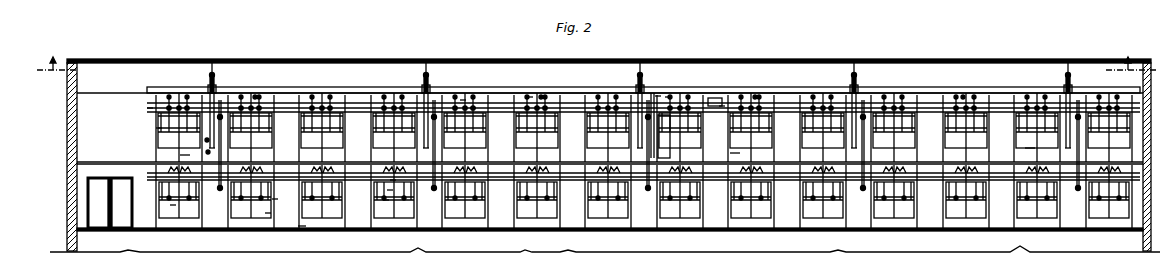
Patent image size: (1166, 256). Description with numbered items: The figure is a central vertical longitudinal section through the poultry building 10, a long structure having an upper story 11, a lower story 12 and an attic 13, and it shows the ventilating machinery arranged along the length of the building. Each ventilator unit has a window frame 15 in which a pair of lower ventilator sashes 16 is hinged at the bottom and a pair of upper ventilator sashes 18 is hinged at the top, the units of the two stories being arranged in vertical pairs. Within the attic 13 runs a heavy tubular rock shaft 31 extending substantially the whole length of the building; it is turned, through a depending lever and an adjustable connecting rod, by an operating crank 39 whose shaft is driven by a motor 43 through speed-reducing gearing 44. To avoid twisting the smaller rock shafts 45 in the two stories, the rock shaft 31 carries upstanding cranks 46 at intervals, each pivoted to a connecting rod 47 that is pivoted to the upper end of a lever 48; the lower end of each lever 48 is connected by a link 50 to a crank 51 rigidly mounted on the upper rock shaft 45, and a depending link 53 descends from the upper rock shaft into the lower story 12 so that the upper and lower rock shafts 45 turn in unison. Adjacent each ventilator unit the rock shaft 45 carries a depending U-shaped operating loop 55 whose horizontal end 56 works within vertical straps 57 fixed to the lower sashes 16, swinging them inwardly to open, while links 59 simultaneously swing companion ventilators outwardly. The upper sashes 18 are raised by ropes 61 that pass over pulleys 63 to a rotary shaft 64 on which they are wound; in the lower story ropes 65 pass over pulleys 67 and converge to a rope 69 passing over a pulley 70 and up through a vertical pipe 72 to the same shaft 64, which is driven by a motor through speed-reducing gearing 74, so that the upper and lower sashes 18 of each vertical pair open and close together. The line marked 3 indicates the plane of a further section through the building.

The section line 3- 3 is at (596, 50).
The poultry building 10 is at (263, 57).
The upper story 11 is at (85, 127).
The lower story 12 is at (85, 187).
The attic 13 is at (458, 70).
The window frame 15 is at (272, 136).
The lower ventilator sashes 16 is at (172, 213).
The upper ventilator sashes 18 is at (172, 205).
The rock shaft 31 is at (329, 88).
The operating crank 39 is at (650, 146).
The motor 43 is at (668, 96).
The speed-reducing gearing 44 is at (658, 95).
The rock shaft 45 is at (155, 112).
The upstanding cranks 46 is at (214, 75).
The connecting rod 47 is at (213, 72).
The lever 48 is at (209, 86).
The connecting rod 50 is at (207, 152).
The crank 51 is at (206, 140).
The depending connecting rod 53 is at (434, 146).
The U-shaped operating loop 55 is at (157, 128).
The horizontal end of operating loop 56 is at (474, 107).
The vertical elongated straps 57 is at (268, 213).
The links or rods 59 is at (464, 99).
The ropes 61 is at (256, 96).
The pulleys 63 is at (531, 96).
The rotary shaft 64 is at (150, 108).
The ropes 65 is at (390, 191).
The pulleys 67 is at (392, 181).
The rope 69 is at (183, 155).
The pulley 70 is at (385, 201).
The vertical pipe 72 is at (722, 105).
The speed-reducing gearing 74 is at (715, 98).